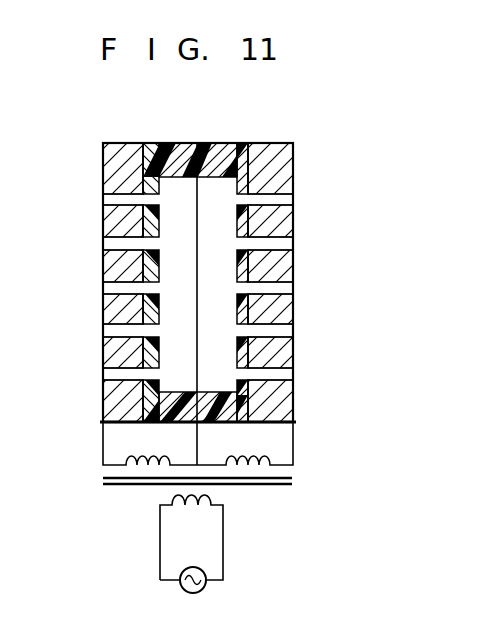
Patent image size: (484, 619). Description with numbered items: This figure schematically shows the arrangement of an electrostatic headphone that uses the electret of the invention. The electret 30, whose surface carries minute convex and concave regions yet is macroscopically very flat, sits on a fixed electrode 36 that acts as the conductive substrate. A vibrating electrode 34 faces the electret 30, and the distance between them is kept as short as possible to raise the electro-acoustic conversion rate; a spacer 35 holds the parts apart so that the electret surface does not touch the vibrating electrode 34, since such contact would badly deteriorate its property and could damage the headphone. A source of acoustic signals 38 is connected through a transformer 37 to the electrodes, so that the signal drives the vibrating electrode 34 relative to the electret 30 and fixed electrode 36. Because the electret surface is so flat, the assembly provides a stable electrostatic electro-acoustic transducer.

The electret 30 is at (241, 143).
The vibrating electrode 34 is at (197, 248).
The spacer 35 is at (205, 143).
The fixed electrode (conductive substrate) 36 is at (282, 143).
The transformer 37 is at (299, 482).
The source of acoustic signals 38 is at (204, 589).